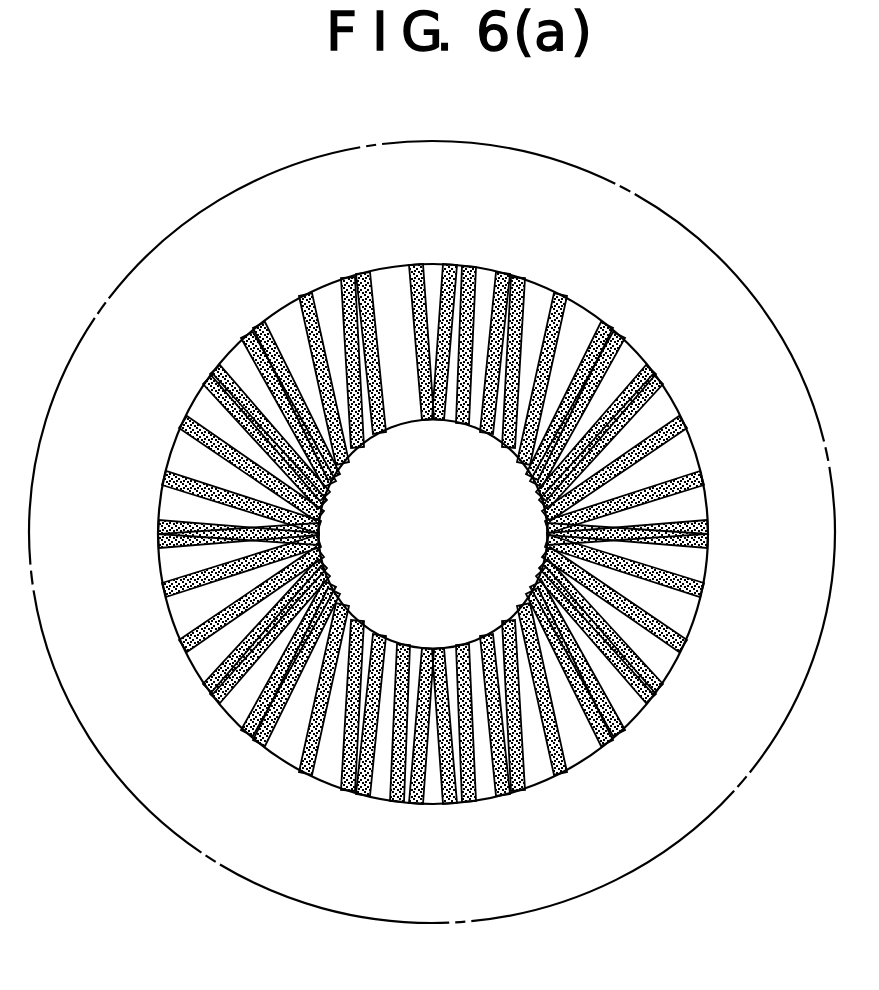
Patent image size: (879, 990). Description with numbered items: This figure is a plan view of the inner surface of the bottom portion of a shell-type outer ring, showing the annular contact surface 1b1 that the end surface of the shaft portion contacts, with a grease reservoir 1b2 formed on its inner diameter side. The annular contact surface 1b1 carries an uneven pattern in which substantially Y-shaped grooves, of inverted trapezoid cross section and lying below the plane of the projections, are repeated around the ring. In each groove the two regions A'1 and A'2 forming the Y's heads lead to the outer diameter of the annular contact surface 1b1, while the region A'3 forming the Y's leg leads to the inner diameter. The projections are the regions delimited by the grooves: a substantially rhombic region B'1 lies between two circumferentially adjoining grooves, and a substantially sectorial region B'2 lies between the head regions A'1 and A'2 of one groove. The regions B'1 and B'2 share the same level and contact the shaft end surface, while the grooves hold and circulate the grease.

The annular contact surface 1b1 is at (418, 496).
The grease reservoir 1b2 is at (459, 559).
The region forming one of the Y's heads of the groove A'1 is at (386, 314).
The region forming the other of the Y's heads of the groove A'2 is at (491, 314).
The region forming the Y's leg of the groove A'3 is at (442, 447).
The substantially rhombic region of the projection B'1 is at (402, 383).
The substantially sectorial region of the projection B'2 is at (438, 301).